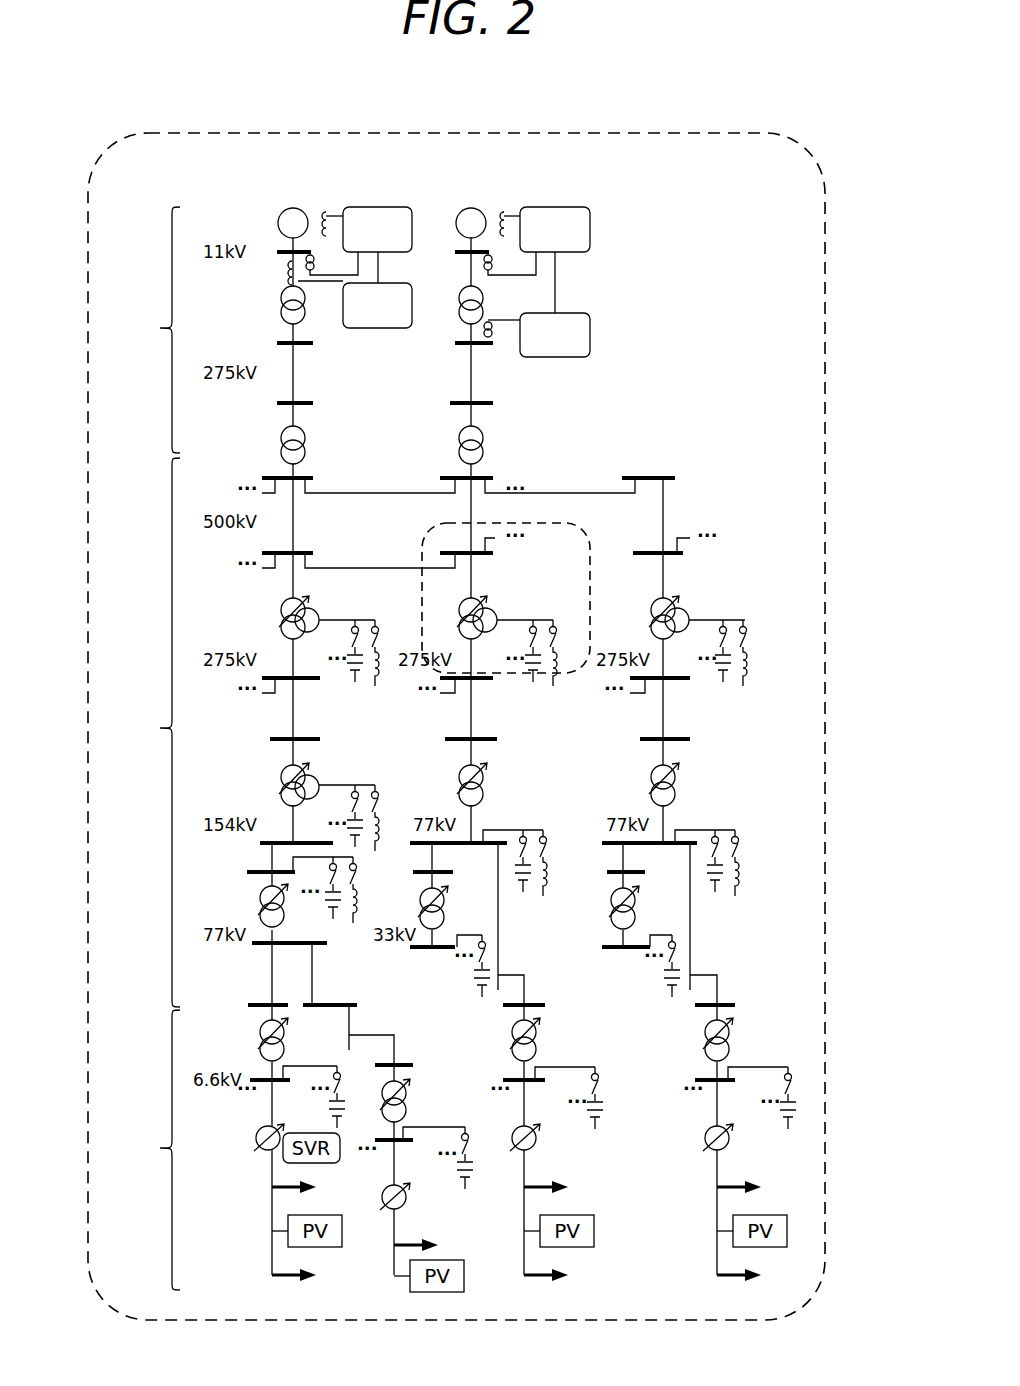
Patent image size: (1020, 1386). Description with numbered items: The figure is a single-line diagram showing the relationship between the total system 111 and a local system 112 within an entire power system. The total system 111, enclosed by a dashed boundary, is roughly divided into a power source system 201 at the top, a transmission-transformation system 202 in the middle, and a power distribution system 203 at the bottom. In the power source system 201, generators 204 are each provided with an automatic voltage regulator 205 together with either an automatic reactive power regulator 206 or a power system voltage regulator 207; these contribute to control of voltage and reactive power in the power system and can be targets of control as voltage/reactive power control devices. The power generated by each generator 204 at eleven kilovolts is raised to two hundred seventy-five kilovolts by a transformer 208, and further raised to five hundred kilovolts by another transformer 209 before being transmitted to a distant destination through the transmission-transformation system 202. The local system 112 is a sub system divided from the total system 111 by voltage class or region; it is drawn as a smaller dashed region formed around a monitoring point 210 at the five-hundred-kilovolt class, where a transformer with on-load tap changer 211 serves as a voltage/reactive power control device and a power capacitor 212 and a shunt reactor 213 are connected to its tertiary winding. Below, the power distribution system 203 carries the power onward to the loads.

The total system 111 is at (652, 133).
The local system 112 is at (585, 530).
The power source system 201 is at (110, 305).
The transmission-transformation system 202 is at (110, 700).
The power distribution system 203 is at (110, 1125).
The generator 204 is at (330, 183).
The automatic voltage regulator 205 is at (378, 207).
The automatic reactive power regulator 206 is at (412, 305).
The power system voltage regulator 207 is at (590, 332).
The transformer 208 is at (282, 296).
The transformer 209 is at (283, 447).
The monitoring point 210 is at (490, 550).
The transformer with on-load tap changer 211 is at (497, 604).
The power capacitor 212 is at (535, 690).
The shunt reactor 213 is at (560, 658).